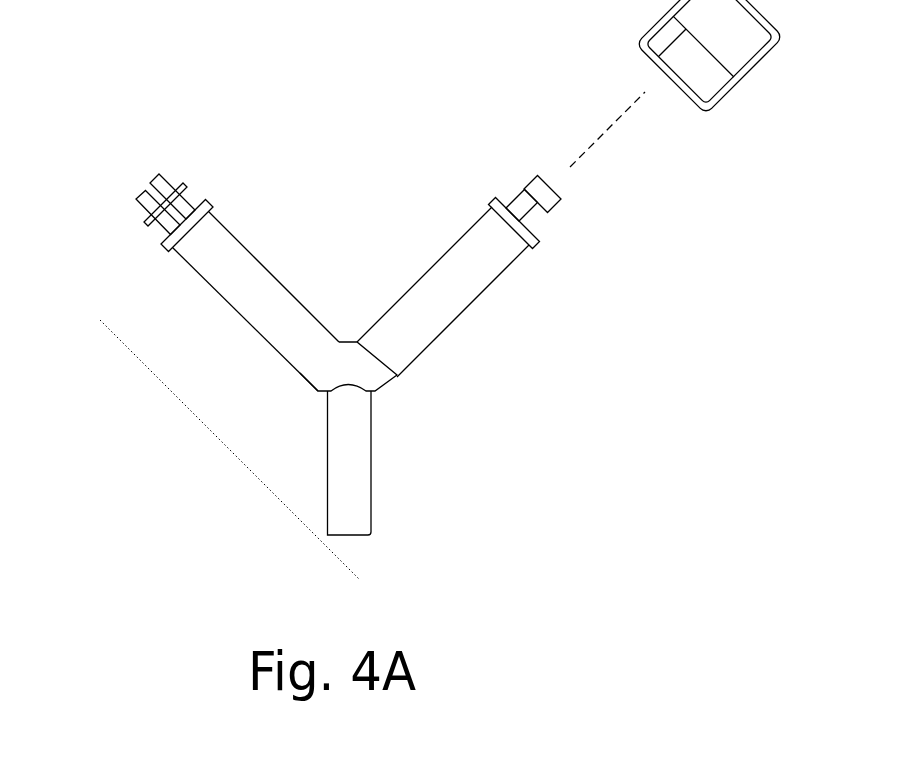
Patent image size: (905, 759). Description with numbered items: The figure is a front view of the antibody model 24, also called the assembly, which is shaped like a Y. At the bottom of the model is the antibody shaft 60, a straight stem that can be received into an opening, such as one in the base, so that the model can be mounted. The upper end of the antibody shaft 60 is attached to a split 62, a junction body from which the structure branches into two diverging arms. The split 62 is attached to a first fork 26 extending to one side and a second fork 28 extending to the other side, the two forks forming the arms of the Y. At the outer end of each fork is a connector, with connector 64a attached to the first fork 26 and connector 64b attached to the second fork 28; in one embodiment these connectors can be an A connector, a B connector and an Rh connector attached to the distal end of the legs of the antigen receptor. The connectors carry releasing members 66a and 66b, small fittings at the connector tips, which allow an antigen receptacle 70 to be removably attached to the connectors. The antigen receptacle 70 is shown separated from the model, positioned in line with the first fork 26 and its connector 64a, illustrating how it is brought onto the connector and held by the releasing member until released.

The antibody model 24 is at (336, 329).
The first fork 26 is at (452, 316).
The second fork 28 is at (247, 324).
The antibody shaft 60 is at (326, 503).
The split 62 is at (315, 381).
The connector 64a is at (534, 217).
The connector 64b is at (140, 248).
The releasing member 66a is at (143, 210).
The releasing member 66b is at (167, 190).
The antigen receptacle 70 is at (715, 95).